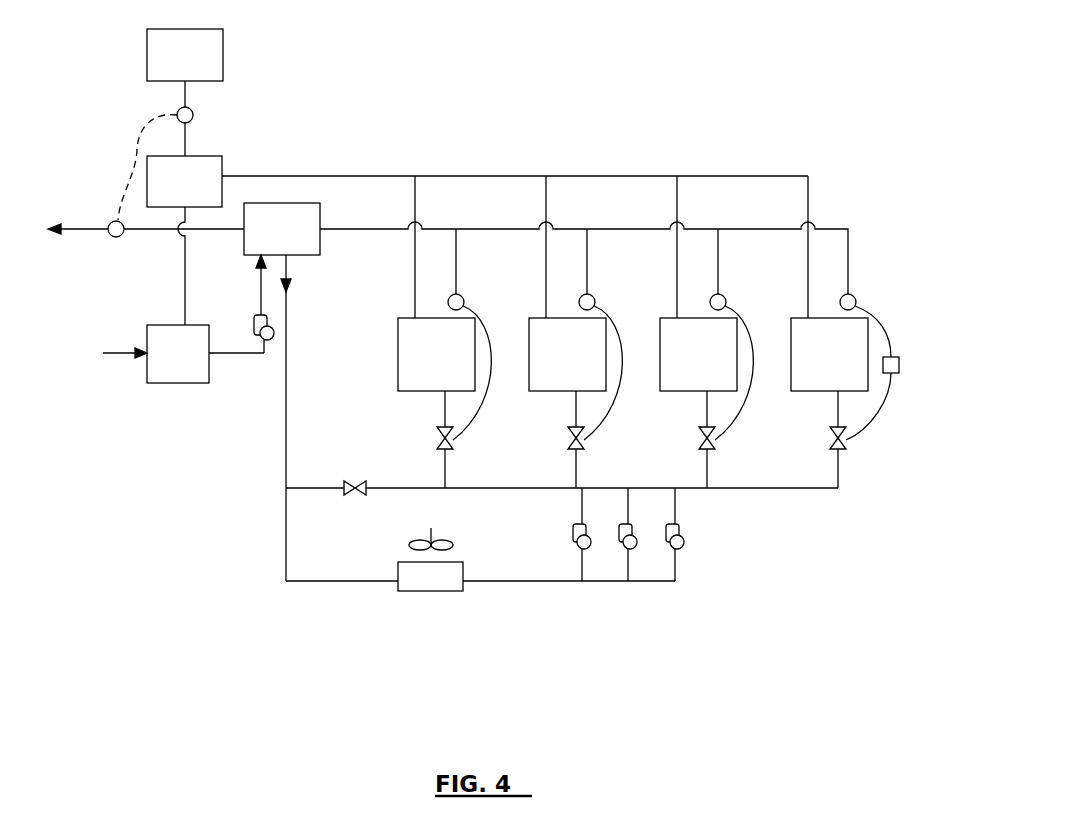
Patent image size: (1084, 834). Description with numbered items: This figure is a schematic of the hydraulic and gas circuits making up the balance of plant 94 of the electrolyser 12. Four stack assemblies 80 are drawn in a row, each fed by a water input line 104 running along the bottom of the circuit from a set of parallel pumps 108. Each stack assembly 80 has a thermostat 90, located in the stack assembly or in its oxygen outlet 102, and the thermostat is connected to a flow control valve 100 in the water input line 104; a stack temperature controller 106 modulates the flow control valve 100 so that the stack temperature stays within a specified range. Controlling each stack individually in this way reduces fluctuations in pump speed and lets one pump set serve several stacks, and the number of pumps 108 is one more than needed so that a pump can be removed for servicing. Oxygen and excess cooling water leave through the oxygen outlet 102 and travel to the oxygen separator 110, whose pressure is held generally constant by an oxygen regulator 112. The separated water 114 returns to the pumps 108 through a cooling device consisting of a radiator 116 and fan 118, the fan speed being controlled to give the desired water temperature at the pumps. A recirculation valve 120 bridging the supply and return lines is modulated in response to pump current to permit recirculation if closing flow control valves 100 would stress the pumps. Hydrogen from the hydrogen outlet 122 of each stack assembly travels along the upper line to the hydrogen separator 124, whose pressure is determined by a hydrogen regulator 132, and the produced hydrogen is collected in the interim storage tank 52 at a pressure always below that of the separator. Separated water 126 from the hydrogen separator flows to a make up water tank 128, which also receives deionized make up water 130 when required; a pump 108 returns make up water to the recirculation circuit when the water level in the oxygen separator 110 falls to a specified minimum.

The electrolyser 12 is at (276, 673).
The balance of plant 94 is at (322, 642).
The interim storage tank 52 is at (223, 55).
The hydrogen regulator 132 is at (193, 115).
The hydrogen separator 124 is at (222, 165).
The oxygen separator 110 is at (320, 215).
The oxygen regulator 112 is at (114, 237).
The separated water 126 is at (185, 292).
The deionized make up water 130 is at (110, 357).
The make up water tank 128 is at (163, 383).
The pump 108 is at (272, 345).
The separated water 114 is at (286, 413).
The recirculation valve 120 is at (358, 497).
The radiator 116 is at (443, 591).
The fan 118 is at (453, 543).
The stack assembly 80 is at (422, 368).
The hydrogen outlet 122 is at (808, 200).
The oxygen outlet 102 is at (848, 247).
The thermostat 90 is at (856, 299).
The stack temperature controller 106 is at (899, 362).
The flow control valve 100 is at (845, 445).
The water input line 104 is at (840, 477).